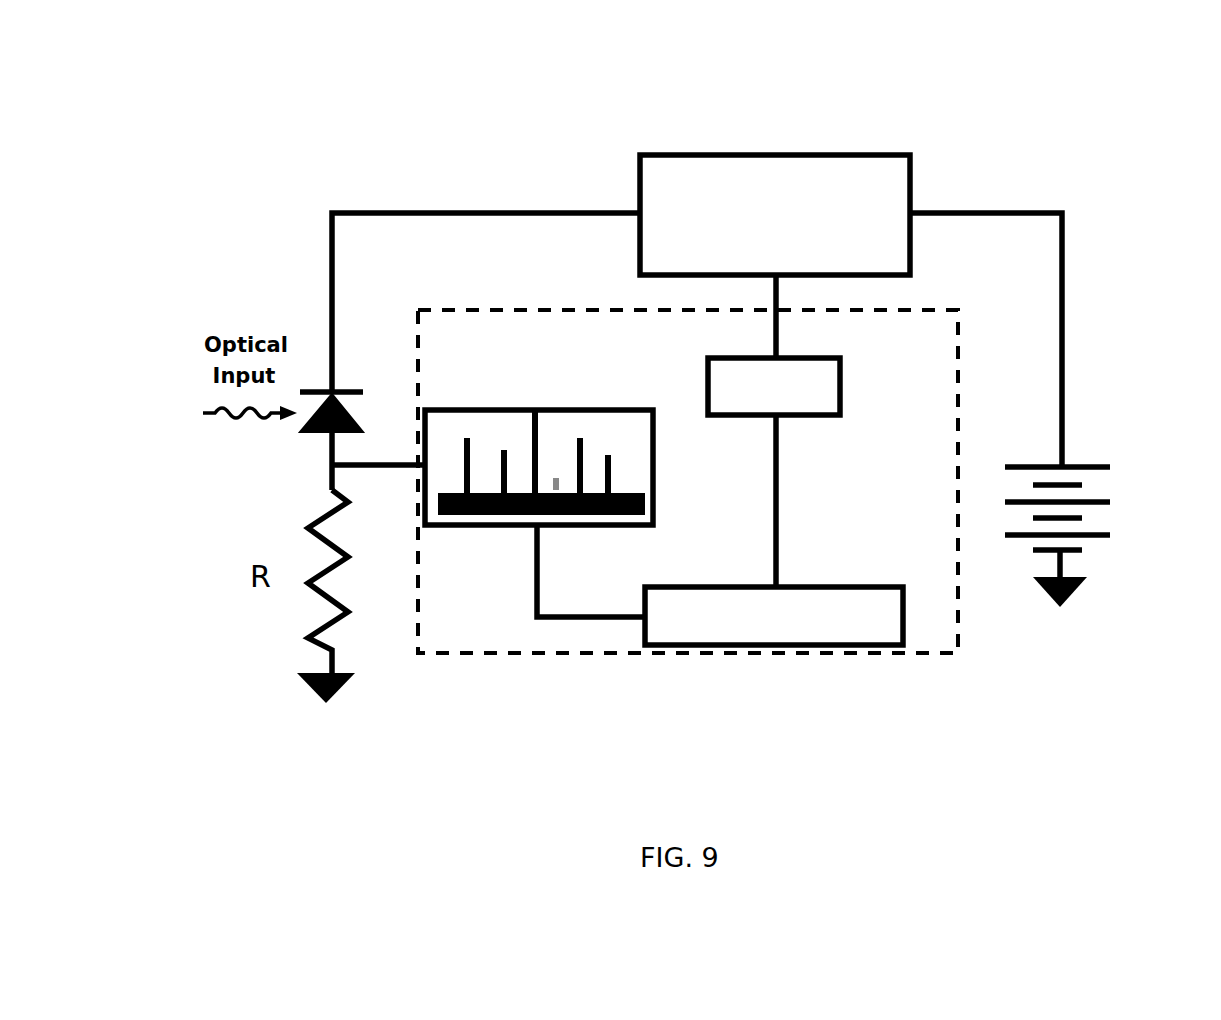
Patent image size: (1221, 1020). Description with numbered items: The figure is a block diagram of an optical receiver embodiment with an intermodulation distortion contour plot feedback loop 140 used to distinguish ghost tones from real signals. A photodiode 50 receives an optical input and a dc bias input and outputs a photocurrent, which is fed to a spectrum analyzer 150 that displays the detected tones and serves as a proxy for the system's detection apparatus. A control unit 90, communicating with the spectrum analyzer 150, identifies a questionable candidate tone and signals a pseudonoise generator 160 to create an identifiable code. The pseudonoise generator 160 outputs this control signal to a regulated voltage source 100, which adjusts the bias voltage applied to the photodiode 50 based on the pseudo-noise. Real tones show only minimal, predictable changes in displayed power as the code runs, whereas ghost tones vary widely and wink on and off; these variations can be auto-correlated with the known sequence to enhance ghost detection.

The photodiode 50 is at (310, 432).
The control unit 90 is at (905, 633).
The regulated voltage source 100 is at (910, 192).
The intermodulation distortion contour plot feedback loop 140 is at (930, 305).
The spectrum analyzer 150 is at (578, 408).
The pseudonoise generator 160 is at (843, 408).